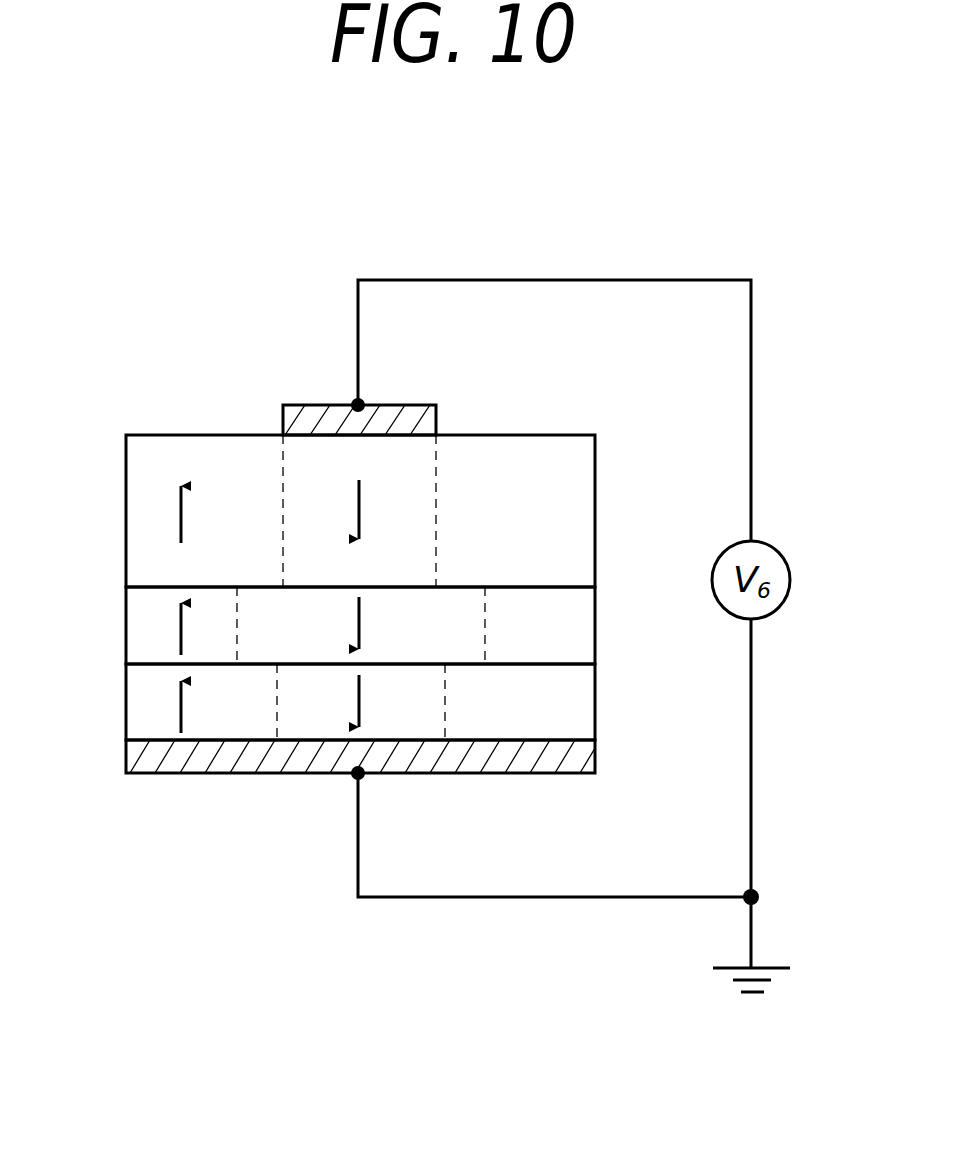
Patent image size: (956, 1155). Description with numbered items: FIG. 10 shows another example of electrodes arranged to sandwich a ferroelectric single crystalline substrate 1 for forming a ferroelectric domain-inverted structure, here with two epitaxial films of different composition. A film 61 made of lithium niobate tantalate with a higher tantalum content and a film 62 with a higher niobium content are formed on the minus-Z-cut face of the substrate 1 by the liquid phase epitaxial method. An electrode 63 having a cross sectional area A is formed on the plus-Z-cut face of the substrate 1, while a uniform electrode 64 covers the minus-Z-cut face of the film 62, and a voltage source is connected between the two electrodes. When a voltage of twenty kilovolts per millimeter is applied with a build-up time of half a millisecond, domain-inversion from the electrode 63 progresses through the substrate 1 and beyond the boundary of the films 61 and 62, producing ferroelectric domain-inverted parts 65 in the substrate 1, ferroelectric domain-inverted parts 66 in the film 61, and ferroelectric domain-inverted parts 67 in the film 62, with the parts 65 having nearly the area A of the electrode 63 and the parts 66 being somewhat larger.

The ferroelectric single crystalline substrate 1 is at (578, 492).
The film made of LiNb0.4Ta0.6O3 61 is at (572, 632).
The film made of LiNb0.9Ta0.1O3 62 is at (578, 710).
The electrode 63 is at (435, 405).
The uniform electrode 64 is at (565, 773).
The ferroelectric domain-inverted parts 65 is at (325, 500).
The ferroelectric domain-inverted parts 66 is at (267, 619).
The ferroelectric domain-inverted parts 67 is at (318, 717).